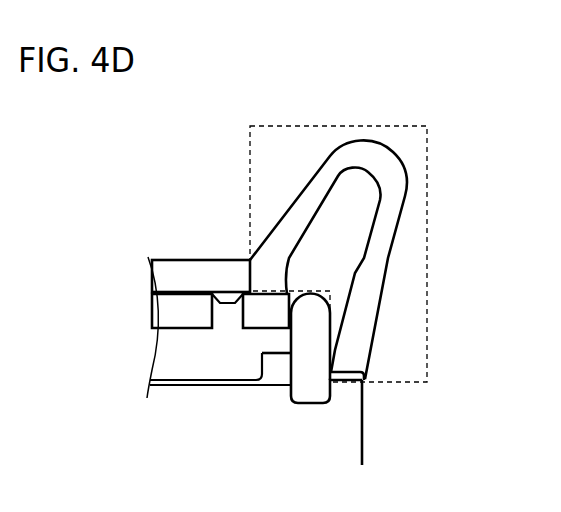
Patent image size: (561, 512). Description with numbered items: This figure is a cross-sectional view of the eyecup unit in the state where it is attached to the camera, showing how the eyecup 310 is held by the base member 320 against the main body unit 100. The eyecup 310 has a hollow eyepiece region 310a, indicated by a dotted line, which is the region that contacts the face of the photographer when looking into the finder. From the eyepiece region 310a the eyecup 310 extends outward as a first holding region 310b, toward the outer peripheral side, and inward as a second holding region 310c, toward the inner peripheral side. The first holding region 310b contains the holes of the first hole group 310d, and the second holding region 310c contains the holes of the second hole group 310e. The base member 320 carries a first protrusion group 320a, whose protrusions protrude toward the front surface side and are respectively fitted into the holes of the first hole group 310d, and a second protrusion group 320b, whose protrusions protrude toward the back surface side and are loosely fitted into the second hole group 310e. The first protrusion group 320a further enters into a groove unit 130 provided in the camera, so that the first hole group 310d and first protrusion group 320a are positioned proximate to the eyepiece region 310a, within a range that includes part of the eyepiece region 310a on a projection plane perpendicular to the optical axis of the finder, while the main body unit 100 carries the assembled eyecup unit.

The eyecup 310 is at (385, 147).
The eyepiece region 310a is at (428, 140).
The first holding region 310b is at (277, 363).
The second holding region 310c is at (158, 314).
The first hole group 310d is at (363, 372).
The second hole group 310e is at (229, 311).
The base member 320 is at (173, 273).
The first protrusion group 320a is at (314, 391).
The second protrusion group 320b is at (247, 300).
The main body unit 100 is at (363, 450).
The groove unit 130 is at (312, 418).